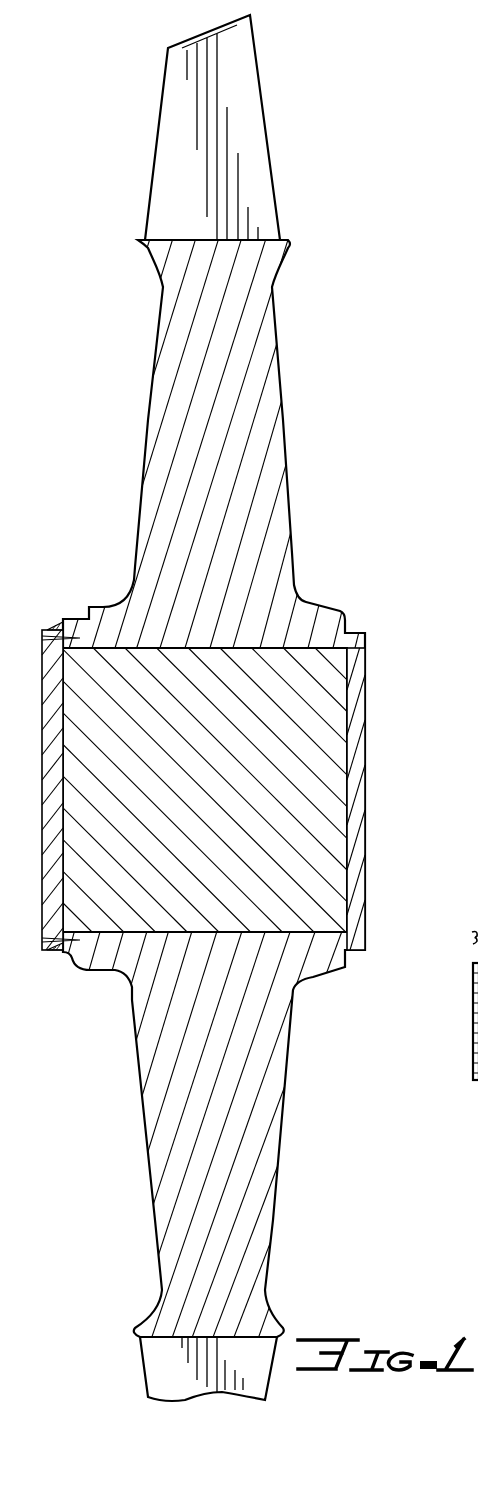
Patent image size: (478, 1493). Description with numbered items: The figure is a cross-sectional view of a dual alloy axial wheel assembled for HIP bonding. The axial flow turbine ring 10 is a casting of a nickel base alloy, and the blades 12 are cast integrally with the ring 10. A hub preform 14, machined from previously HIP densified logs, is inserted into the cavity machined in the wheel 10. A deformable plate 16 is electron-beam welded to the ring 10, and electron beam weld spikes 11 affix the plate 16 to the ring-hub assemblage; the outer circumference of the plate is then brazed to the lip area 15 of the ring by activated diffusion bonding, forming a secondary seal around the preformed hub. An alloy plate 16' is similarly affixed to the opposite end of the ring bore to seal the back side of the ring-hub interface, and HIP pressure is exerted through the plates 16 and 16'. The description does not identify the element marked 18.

The axial flow turbine ring 10 is at (273, 486).
The electron beam weld spikes 11 is at (43, 638).
The blades 12 is at (247, 121).
The hub preform 14 is at (322, 877).
The lip area 15 is at (65, 955).
The deformable plate 16 is at (32, 790).
The alloy plate 16' is at (378, 799).
The upper retaining wedge 18 is at (47, 627).